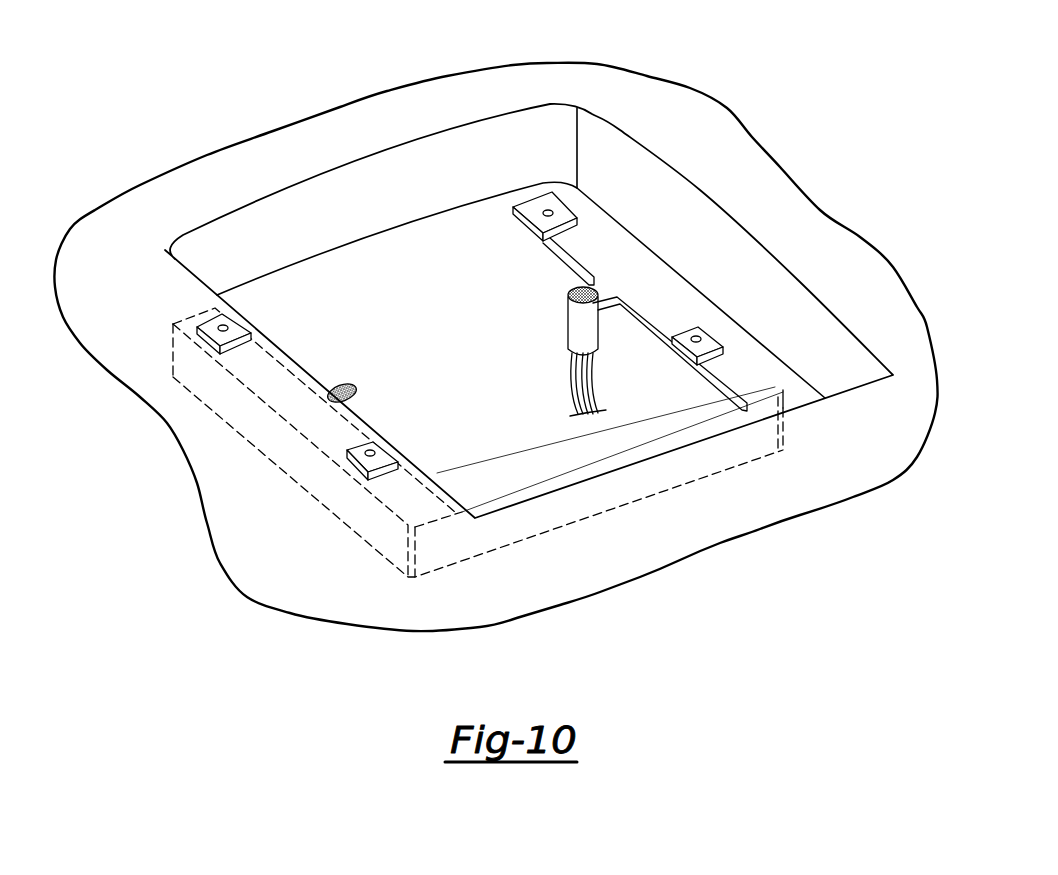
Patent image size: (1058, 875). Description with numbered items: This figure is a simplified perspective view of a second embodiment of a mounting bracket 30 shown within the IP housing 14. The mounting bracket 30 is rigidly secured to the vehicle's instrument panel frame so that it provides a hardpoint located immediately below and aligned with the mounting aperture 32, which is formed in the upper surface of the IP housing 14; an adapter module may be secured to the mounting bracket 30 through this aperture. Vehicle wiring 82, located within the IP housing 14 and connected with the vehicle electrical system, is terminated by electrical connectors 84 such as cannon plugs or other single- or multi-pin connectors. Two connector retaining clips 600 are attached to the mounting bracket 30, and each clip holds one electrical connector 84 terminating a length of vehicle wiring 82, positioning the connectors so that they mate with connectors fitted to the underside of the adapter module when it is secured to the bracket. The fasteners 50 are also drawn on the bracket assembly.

The IP housing 14 is at (663, 100).
The mounting aperture 32 is at (408, 168).
The mounting bracket 30 is at (585, 250).
The mounting block 50 is at (537, 208).
The electrical connector 84 is at (577, 325).
The vehicle wiring 82 is at (573, 384).
The connector retaining clip 600 is at (600, 287).